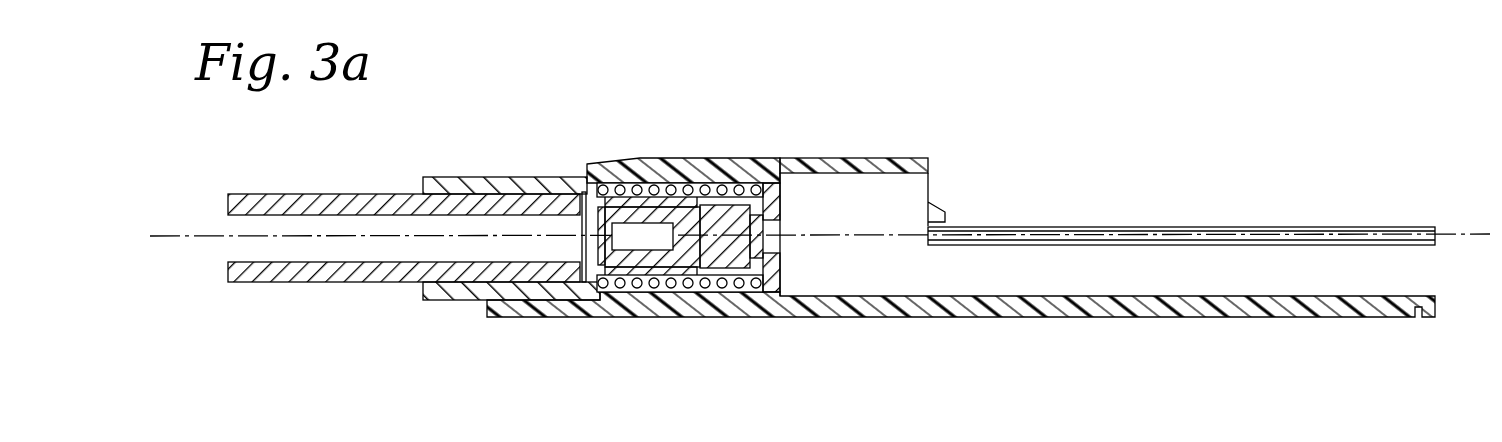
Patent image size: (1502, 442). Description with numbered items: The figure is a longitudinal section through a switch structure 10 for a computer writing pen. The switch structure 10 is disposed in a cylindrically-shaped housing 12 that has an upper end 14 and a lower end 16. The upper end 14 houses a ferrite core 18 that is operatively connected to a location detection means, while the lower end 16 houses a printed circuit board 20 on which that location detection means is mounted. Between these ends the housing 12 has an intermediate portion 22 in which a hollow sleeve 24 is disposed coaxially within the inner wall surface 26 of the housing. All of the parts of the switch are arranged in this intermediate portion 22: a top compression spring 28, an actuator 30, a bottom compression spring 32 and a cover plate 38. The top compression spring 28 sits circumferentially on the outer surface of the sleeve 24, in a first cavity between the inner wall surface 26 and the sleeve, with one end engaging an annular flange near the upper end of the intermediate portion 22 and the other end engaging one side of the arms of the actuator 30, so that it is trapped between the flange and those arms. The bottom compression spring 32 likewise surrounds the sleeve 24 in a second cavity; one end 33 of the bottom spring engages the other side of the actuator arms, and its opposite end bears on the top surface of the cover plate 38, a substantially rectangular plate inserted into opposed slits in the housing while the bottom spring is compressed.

The switch structure 10 is at (817, 108).
The cylindrically-shaped housing 12 is at (852, 318).
The upper end 14 is at (423, 177).
The lower end 16 is at (932, 185).
The ferrite core 18 is at (257, 195).
The printed circuit board 20 is at (1187, 232).
The intermediate portion 22 is at (605, 158).
The hollow sleeve 24 is at (625, 272).
The inner wall surface 26 is at (585, 173).
The top compression spring 28 is at (655, 275).
The actuator 30 is at (718, 207).
The bottom compression spring 32 is at (745, 290).
The end of the bottom spring 33 is at (704, 197).
The cover plate 38 is at (780, 200).